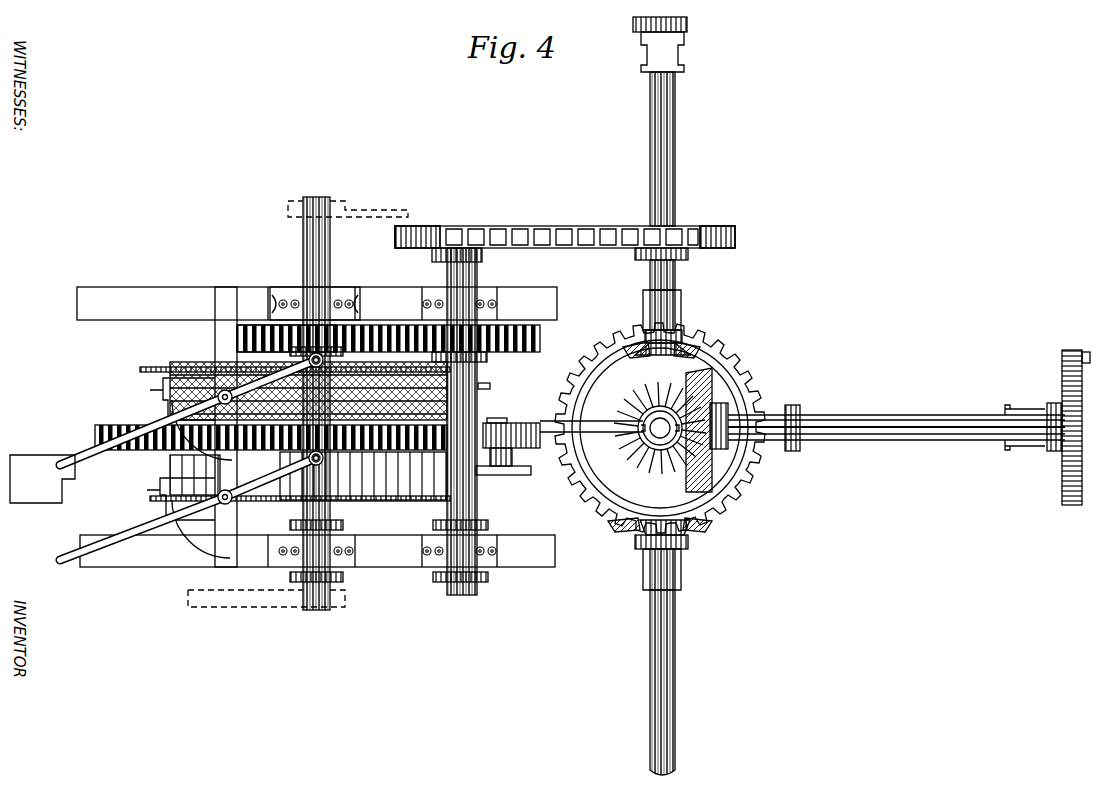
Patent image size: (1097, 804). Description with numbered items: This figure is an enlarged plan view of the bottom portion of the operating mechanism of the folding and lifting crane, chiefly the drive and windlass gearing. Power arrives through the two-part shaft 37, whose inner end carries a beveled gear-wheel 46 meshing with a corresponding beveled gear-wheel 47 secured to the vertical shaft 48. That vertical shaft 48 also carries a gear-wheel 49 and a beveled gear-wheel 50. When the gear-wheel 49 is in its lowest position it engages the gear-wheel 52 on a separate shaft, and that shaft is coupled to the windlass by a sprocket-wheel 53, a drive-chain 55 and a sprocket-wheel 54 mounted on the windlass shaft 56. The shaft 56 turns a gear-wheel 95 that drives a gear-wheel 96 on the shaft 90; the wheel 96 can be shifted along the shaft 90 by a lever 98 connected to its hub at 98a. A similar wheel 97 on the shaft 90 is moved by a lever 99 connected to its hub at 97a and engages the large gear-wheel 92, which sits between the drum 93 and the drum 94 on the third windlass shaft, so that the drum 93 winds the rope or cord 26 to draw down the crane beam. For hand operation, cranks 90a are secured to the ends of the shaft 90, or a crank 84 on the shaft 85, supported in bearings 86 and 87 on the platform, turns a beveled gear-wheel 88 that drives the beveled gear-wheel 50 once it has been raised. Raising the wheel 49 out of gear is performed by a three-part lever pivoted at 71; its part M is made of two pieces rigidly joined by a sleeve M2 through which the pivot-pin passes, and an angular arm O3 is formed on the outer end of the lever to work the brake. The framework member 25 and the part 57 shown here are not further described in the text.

The top frame beam 25 is at (178, 287).
The rope or cord 26 is at (455, 398).
The shaft 37 is at (650, 648).
The beveled gear-wheel 46 is at (622, 538).
The beveled gear-wheel 47 is at (592, 503).
The vertical shaft 48 is at (660, 428).
The gear-wheel 49 is at (605, 370).
The beveled gear-wheel 50 is at (655, 404).
The gear-wheel 52 is at (640, 347).
The sprocket-wheel 53 is at (712, 226).
The sprocket-wheel 54 is at (428, 226).
The drive-chain 55 is at (558, 226).
The shaft 56 is at (445, 258).
The upper vertical shaft 57 is at (650, 126).
The pivotal point 71 is at (510, 476).
The crank 84 is at (1066, 352).
The shaft 85 is at (887, 414).
The bearing 86 is at (768, 412).
The bearing 87 is at (1026, 414).
The beveled gear-wheel 88 is at (712, 475).
The shaft 90 is at (322, 200).
The crank 90a is at (378, 214).
The large gear-wheel 92 is at (100, 428).
The drum 93 is at (175, 366).
The drum 94 is at (400, 500).
The gear-wheel 95 is at (540, 343).
The gear-wheel 96 is at (240, 338).
The wheel 97 is at (312, 468).
The hub connection 97a is at (325, 470).
The lever 98 is at (67, 460).
The hub connection 98a is at (282, 330).
The lever 99 is at (65, 557).
The lever part M is at (540, 420).
The sleeve M2 is at (512, 458).
The angular arm O3 is at (42, 479).